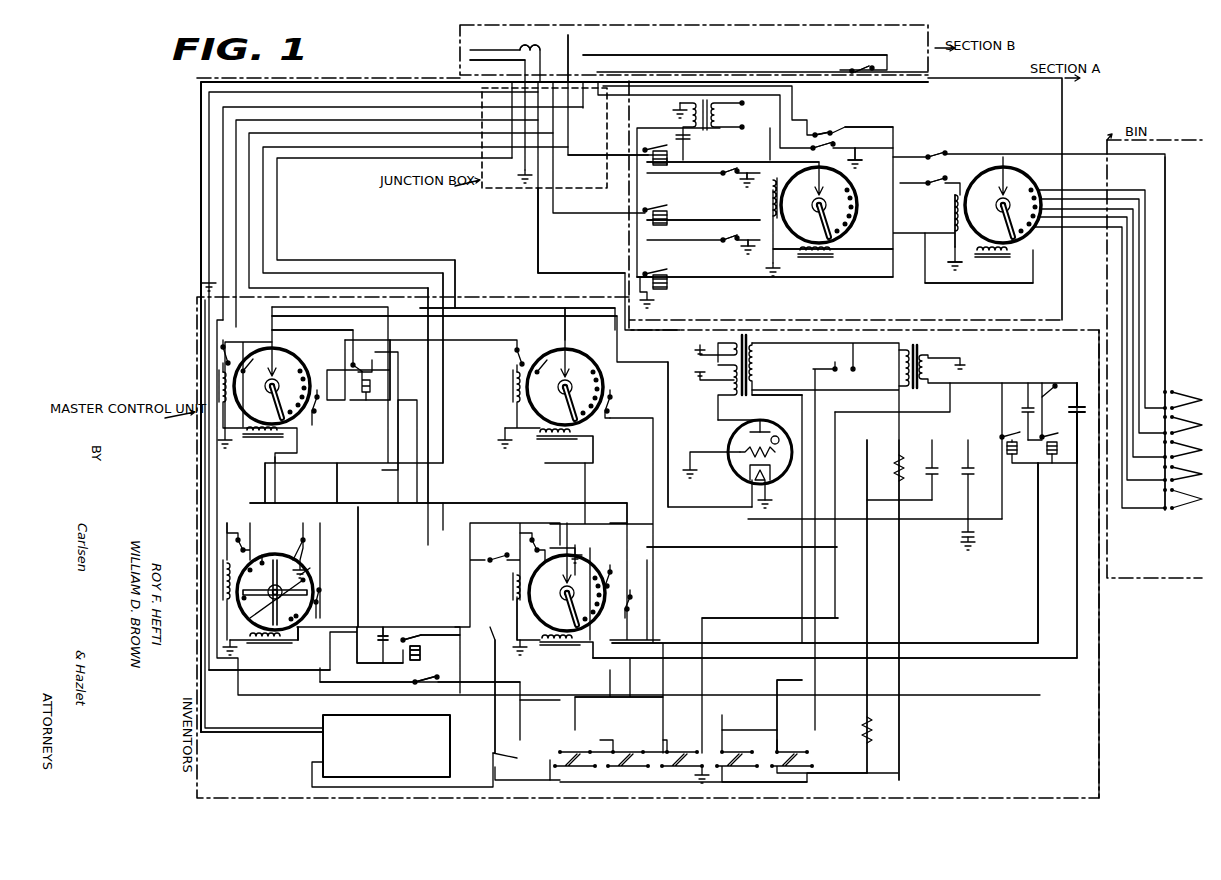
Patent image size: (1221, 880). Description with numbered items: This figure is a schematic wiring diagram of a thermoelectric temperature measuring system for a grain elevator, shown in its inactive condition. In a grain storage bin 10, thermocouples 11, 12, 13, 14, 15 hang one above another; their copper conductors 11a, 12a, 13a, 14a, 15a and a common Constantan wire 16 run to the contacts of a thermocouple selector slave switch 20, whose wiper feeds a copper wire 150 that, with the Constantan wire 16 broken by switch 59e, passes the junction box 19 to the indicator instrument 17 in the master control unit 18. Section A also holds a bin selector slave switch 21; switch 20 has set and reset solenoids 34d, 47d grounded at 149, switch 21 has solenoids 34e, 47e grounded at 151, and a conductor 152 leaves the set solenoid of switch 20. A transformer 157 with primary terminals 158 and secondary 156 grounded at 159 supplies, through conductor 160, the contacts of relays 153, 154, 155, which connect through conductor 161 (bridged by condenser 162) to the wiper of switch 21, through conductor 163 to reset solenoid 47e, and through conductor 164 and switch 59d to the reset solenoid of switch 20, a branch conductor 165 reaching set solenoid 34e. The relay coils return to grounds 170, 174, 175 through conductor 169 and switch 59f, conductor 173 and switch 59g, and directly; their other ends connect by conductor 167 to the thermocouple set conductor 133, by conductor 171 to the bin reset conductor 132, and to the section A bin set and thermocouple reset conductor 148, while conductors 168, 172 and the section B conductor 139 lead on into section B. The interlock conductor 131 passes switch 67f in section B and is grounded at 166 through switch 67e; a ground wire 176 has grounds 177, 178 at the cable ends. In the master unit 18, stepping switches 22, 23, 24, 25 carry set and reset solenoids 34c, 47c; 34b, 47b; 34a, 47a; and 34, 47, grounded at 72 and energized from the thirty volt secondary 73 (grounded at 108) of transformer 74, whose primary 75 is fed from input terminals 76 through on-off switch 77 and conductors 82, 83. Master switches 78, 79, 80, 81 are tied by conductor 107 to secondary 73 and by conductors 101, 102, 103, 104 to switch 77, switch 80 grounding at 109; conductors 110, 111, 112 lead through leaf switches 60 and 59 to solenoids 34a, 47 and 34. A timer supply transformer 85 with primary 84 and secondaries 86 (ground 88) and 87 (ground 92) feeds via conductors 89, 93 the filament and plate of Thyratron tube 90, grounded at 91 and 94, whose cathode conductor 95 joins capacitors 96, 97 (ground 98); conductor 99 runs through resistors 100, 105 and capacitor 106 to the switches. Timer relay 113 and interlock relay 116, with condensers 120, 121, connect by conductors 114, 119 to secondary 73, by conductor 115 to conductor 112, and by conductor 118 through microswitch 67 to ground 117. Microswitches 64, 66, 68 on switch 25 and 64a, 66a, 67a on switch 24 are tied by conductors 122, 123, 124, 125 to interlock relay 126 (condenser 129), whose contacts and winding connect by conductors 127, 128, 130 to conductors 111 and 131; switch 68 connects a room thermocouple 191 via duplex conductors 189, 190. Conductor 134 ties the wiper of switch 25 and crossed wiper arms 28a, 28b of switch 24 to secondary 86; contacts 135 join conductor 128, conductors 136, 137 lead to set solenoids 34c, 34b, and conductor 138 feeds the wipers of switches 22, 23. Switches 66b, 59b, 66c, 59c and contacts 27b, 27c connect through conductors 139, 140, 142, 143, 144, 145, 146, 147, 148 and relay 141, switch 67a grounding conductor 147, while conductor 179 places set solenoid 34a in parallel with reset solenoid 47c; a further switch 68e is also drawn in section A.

The grain storage bin 10 is at (1114, 587).
The thermocouple 11 is at (1182, 502).
The thermocouple 12 is at (1182, 477).
The thermocouple 13 is at (1182, 453).
The thermocouple 14 is at (1182, 428).
The thermocouple 15 is at (1182, 403).
The individual conductor 11a is at (1100, 374).
The individual conductor 12a is at (1101, 355).
The individual conductor 13a is at (1102, 339).
The individual conductor 14a is at (1102, 322).
The individual conductor 15a is at (1101, 305).
The common wire 16 is at (1165, 346).
The electronic potentiometer 17 is at (323, 714).
The master control unit 18 is at (1099, 658).
The junction box 19 is at (492, 192).
The thermocouple selector slave switch 20 is at (1003, 205).
The bin selector slave switch 21 is at (819, 205).
The master bin switch for section A 22 is at (272, 365).
The master bin switch for section B 23 is at (565, 366).
The section switch 24 is at (275, 592).
The master thermocouple switch 25 is at (567, 577).
The contact 27b is at (543, 351).
The contact 27c is at (221, 390).
The wiper arm 28a is at (310, 568).
The wiper arm 28b is at (298, 541).
The set solenoid 34 is at (559, 651).
The set solenoid 34a is at (256, 646).
The set solenoid 34b is at (554, 440).
The set solenoid 34c is at (256, 440).
The set solenoid 34d is at (994, 260).
The set solenoid 34e is at (814, 260).
The reset solenoid 47 is at (515, 601).
The reset solenoid 47a is at (225, 575).
The reset solenoid 47b is at (515, 400).
The reset solenoid 47c is at (221, 378).
The reset solenoid 47d is at (953, 218).
The reset solenoid 47e is at (771, 209).
The leaf switch 59 is at (496, 565).
The switch 59b is at (518, 376).
The switch 59c is at (223, 347).
The switch 59d is at (929, 190).
The switch 59e is at (946, 142).
The switch 59f is at (723, 187).
The switch 59g is at (717, 252).
The leaf switch 60 is at (421, 680).
The switch 64 is at (530, 547).
The microswitch 64a is at (238, 543).
The switch 66 is at (646, 597).
The microswitch 66a is at (318, 602).
The switch 66b is at (613, 405).
The switch 66c is at (320, 415).
The microswitch 67 is at (618, 576).
The microswitch 67a is at (314, 543).
The switch 67e is at (856, 138).
The switch 67f is at (855, 68).
The microswitch 68 is at (495, 624).
The switch 68e is at (827, 122).
The ground 72 is at (195, 650).
The secondary winding 73 is at (930, 361).
The transformer 74 is at (915, 351).
The primary 75 is at (901, 368).
The input terminals 76 is at (851, 366).
The master on-off switch 77 is at (813, 748).
The section switch 78 is at (577, 752).
The bin switch 79 is at (629, 752).
The thermocouple switch 80 is at (682, 752).
The automatic timing switch 81 is at (750, 750).
The conductor 82 is at (821, 676).
The conductor 83 is at (778, 686).
The primary 84 is at (757, 358).
The timer supply transformer 85 is at (744, 334).
The low voltage secondary 86 is at (737, 334).
The high voltage secondary 87 is at (745, 400).
The ground 88 is at (700, 345).
The conductor 89 is at (696, 374).
The Thyratron timing tube 90 is at (735, 478).
The ground 91 is at (772, 508).
The ground 92 is at (693, 394).
The conductor 93 is at (720, 422).
The ground 94 is at (711, 473).
The conductor 95 is at (867, 505).
The fixed capacitor 96 is at (968, 478).
The fixed capacitor 97 is at (962, 537).
The ground 98 is at (978, 546).
The conductor 99 is at (953, 419).
The timing speed controlling resistor 100 is at (867, 733).
The conductor 101 is at (782, 745).
The conductor 102 is at (806, 784).
The conductor 103 is at (722, 730).
The conductor 104 is at (904, 750).
The timing speed controlling resistor 105 is at (898, 472).
The fixed capacitor 106 is at (931, 478).
The conductor 107 is at (760, 612).
The ground 108 is at (958, 371).
The ground 109 is at (700, 776).
The conductor 110 is at (343, 688).
The conductor 111 is at (613, 698).
The conductor 112 is at (659, 670).
The timer relay 113 is at (1007, 448).
The conductor 114 is at (1002, 414).
The branching conductor 115 is at (1077, 484).
The interlock relay 116 is at (1042, 458).
The ground 117 is at (575, 546).
The conductor 118 is at (1026, 634).
The conductor 119 is at (1046, 388).
The fixed condenser 120 is at (1018, 411).
The fixed condenser 121 is at (1069, 410).
The branching conductor 122 is at (460, 500).
The conductor 123 is at (615, 513).
The conductor 124 is at (739, 554).
The conductor 125 is at (358, 584).
The interlock relay 126 is at (405, 637).
The conductor 127 is at (437, 663).
The conductor 128 is at (450, 635).
The condenser 129 is at (379, 639).
The conductor 130 is at (357, 654).
The interlock conductor 131 is at (223, 180).
The bin reset conductor 132 is at (263, 208).
The thermocouple set conductor 133 is at (277, 227).
The branching conductor 134 is at (548, 700).
The contacts 135 is at (300, 632).
The conductor 136 is at (275, 486).
The conductor 137 is at (265, 486).
The branching conductor 138 is at (567, 328).
The section B bin set and thermocouple reset conductor 139 is at (279, 182).
The conductor 140 is at (455, 347).
The double-pole single-throw relay 141 is at (368, 402).
The conductor 142 is at (398, 444).
The conductor 143 is at (324, 314).
The conductor 144 is at (390, 344).
The branching conductor 145 is at (310, 335).
The conductor 146 is at (390, 368).
The conductor 147 is at (337, 486).
The section A bin set and thermocouple reset conductor 148 is at (236, 210).
The ground 149 is at (953, 262).
The copper wire 150 is at (323, 728).
The ground 151 is at (774, 276).
The conductor 152 is at (949, 285).
The relay 153 is at (642, 162).
The relay 154 is at (642, 224).
The relay 155 is at (642, 287).
The secondary 156 is at (693, 100).
The transformer 157 is at (707, 98).
The primary terminals 158 is at (753, 113).
The ground 159 is at (673, 108).
The conductor 160 is at (639, 155).
The conductor 161 is at (738, 161).
The condenser 162 is at (690, 142).
The conductor 163 is at (672, 218).
The conductor 164 is at (806, 282).
The branch conductor 165 is at (862, 255).
The ground 166 is at (869, 161).
The conductor 167 is at (600, 159).
The conductor 168 is at (568, 40).
The conductor 169 is at (667, 176).
The ground 170 is at (750, 178).
The conductor 171 is at (539, 222).
The conductor 172 is at (533, 38).
The conductor 173 is at (655, 243).
The ground 174 is at (747, 255).
The ground 175 is at (662, 293).
The ground wire 176 is at (209, 152).
The ground 177 is at (525, 178).
The ground 178 is at (209, 283).
The conductor 179 is at (201, 462).
The duplex conductor 189 is at (491, 759).
The duplex conductor 190 is at (315, 769).
The thermocouple 191 is at (513, 766).